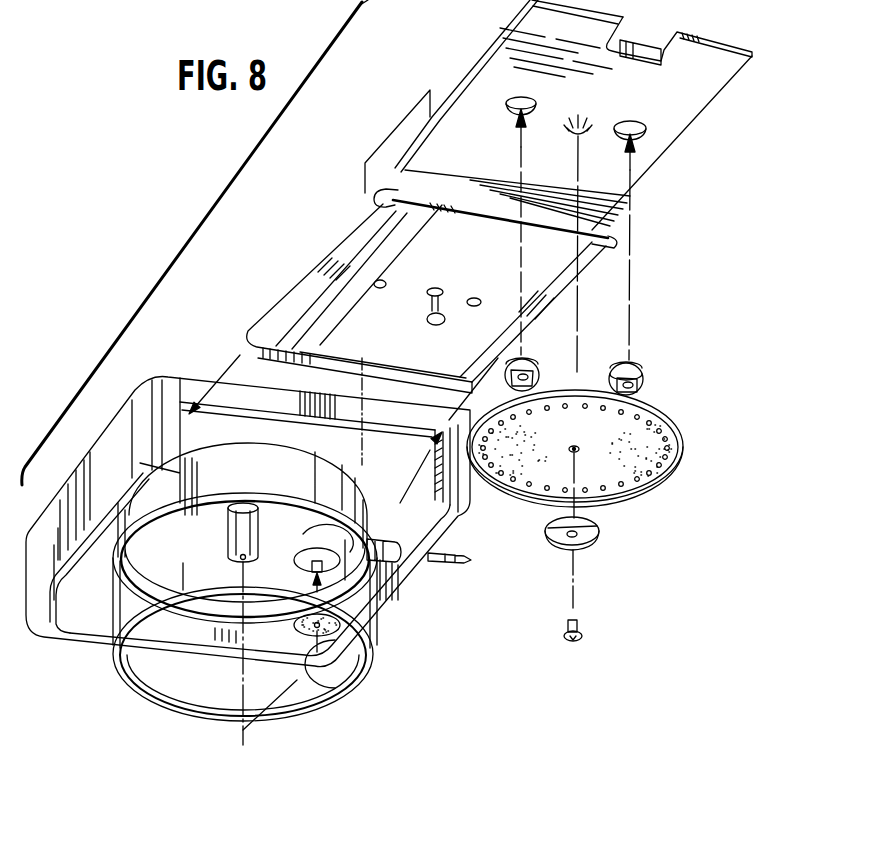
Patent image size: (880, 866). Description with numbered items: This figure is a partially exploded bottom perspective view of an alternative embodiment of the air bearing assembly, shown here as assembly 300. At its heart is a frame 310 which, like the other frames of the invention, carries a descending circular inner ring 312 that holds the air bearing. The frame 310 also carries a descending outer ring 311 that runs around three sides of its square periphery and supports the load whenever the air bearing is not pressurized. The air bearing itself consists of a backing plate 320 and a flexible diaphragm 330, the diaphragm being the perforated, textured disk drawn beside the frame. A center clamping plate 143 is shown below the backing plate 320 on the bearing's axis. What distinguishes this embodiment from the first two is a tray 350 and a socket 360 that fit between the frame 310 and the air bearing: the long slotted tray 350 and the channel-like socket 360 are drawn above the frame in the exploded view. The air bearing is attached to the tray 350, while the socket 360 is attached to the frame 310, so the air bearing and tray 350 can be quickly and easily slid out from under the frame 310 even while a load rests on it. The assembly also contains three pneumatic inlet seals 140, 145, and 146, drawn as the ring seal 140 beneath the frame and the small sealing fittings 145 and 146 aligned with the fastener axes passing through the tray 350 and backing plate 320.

The housing panel 300 is at (193, 226).
The frame 310 is at (276, 550).
The descending outer ring 311 is at (382, 598).
The descending circular inner ring 312 is at (388, 560).
The backing plate 320 is at (685, 447).
The flexible diaphragm 330 is at (631, 471).
The pneumatic inlet seal 140 is at (343, 690).
The center clamping plate 143 is at (598, 537).
The pneumatic inlet seal 145 is at (643, 382).
The pneumatic inlet seal 146 is at (540, 360).
The tray 350 is at (680, 118).
The socket 360 is at (313, 253).